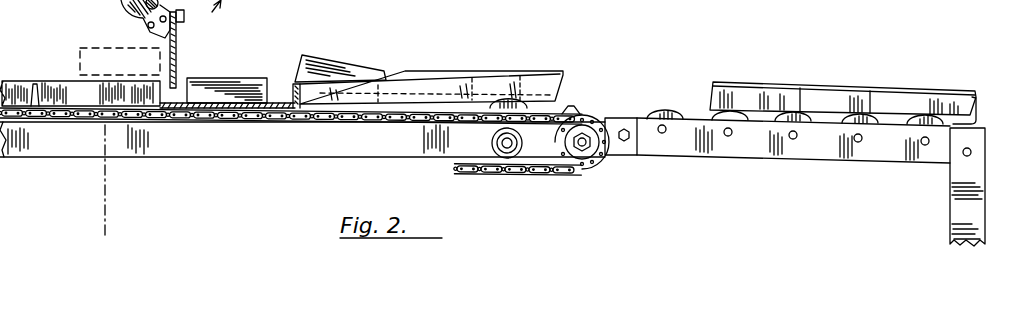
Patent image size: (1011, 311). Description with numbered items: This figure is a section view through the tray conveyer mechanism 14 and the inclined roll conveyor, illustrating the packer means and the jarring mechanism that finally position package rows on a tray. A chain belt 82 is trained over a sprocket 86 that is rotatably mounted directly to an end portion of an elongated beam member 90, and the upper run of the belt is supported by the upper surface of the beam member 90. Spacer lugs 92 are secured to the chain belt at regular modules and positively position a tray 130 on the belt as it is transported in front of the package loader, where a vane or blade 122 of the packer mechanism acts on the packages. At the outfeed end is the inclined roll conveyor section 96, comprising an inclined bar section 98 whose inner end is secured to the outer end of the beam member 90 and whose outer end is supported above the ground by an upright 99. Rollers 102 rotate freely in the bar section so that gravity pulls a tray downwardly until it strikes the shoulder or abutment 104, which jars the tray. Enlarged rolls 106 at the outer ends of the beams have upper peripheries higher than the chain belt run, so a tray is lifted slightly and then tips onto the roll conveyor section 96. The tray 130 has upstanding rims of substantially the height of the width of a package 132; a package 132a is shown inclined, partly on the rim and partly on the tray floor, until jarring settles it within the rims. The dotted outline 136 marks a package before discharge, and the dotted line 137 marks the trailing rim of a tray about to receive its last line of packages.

The tray conveyer mechanism 14 is at (85, 186).
The chain belt 82 is at (558, 170).
The sprocket 86 is at (522, 143).
The beam member 90 is at (237, 158).
The spacer lug 92 is at (34, 107).
The inclined roll conveyor section 96 is at (848, 196).
The bar section 98 is at (759, 160).
The upright 99 is at (950, 211).
The roller 102 is at (699, 113).
The shoulder or abutment 104 is at (977, 100).
The enlarged roll 106 is at (490, 172).
The vane or blade 122 is at (174, 58).
The tray 130 is at (555, 88).
The package 132 is at (492, 73).
The package 132a is at (326, 62).
The dotted outline 136 is at (88, 47).
The dotted line 137 is at (106, 180).